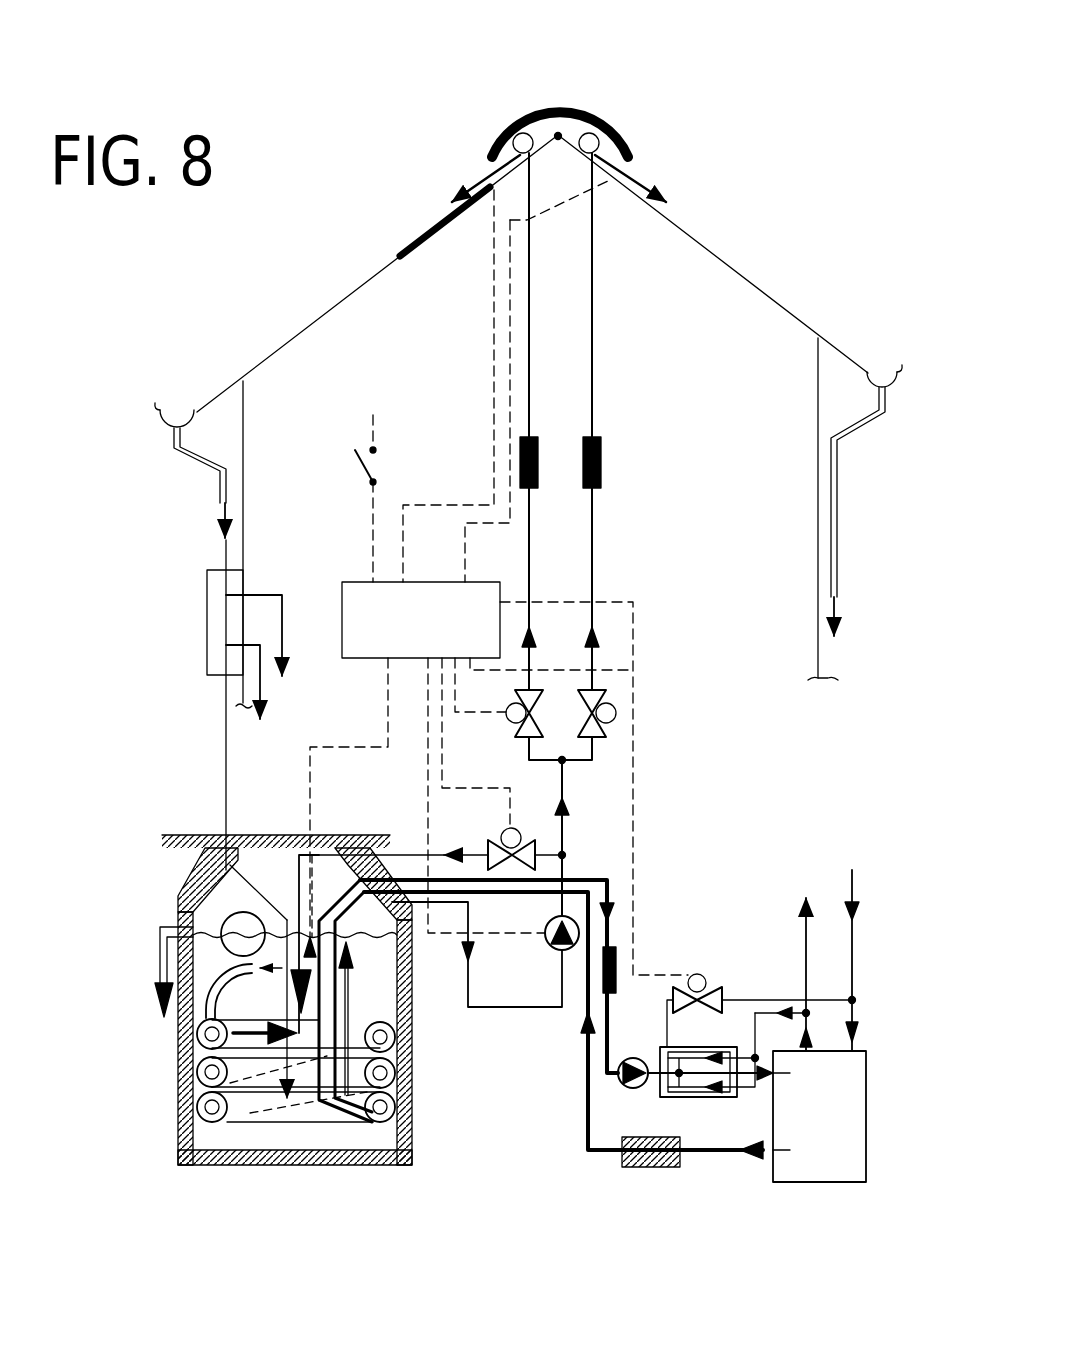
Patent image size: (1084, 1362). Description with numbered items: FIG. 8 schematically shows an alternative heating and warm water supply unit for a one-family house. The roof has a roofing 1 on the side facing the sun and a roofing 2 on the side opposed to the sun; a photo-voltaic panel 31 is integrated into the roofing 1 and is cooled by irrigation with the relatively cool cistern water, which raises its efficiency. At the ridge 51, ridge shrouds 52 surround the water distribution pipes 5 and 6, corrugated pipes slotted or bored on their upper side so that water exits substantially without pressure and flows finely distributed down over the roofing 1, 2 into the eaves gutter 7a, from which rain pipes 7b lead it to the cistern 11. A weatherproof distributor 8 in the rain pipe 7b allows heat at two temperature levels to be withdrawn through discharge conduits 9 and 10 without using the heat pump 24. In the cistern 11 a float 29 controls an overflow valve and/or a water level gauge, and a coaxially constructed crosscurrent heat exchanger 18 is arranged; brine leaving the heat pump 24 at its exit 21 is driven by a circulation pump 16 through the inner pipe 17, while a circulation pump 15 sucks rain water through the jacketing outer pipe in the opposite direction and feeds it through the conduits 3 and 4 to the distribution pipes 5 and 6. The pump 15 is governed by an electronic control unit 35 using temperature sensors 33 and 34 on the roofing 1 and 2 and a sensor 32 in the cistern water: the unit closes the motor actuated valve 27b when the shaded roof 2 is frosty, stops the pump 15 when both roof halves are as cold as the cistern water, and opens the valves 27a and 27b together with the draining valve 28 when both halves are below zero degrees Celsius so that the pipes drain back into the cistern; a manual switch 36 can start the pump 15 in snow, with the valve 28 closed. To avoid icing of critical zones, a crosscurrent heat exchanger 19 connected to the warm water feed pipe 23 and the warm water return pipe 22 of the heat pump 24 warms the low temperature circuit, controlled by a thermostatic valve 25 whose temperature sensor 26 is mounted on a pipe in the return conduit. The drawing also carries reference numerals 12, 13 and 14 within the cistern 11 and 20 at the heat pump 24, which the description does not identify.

The roofing 1 is at (377, 273).
The roofing 2 is at (713, 254).
The conduit 3 is at (535, 421).
The conduit 4 is at (599, 421).
The water distribution pipe 5 is at (502, 137).
The water distribution pipe 6 is at (613, 142).
The eaves gutter 7a is at (531, 397).
The rain pipe 7b is at (220, 488).
The weatherproof distributor 8 is at (212, 622).
The discharge conduit 9 is at (263, 653).
The discharge conduit 10 is at (251, 705).
The cistern 11 is at (332, 1163).
The inlet pipe 12 is at (272, 973).
The riser pipe 13 is at (353, 997).
The feed pipe 14 is at (298, 866).
The circulation pump 15 is at (553, 947).
The circulation pump 16 is at (632, 1095).
The inner pipe 17 is at (397, 1105).
The crosscurrent heat exchanger 18 is at (247, 1105).
The crosscurrent heat exchanger 19 is at (705, 1100).
The heat pump inlet 20 is at (793, 1078).
The heat pump exit 21 is at (793, 1153).
The warm water return pipe 22 is at (851, 936).
The warm water feed pipe 23 is at (806, 944).
The heat pump 24 is at (820, 1185).
The thermostatic valve 25 is at (702, 977).
The temperature sensor 26 is at (615, 952).
The motor actuated valve 27a is at (512, 722).
The motor actuated valve 27b is at (617, 717).
The draining valve 28 is at (440, 834).
The float 29 is at (217, 917).
The photo-voltaic panel 31 is at (423, 232).
The temperature sensor 32 is at (343, 747).
The temperature sensor 33 is at (490, 192).
The temperature sensor 34 is at (610, 182).
The electronic control unit 35 is at (515, 577).
The manual switch 36 is at (384, 498).
The ridge 51 is at (559, 135).
The ridge shroud 52 is at (540, 107).